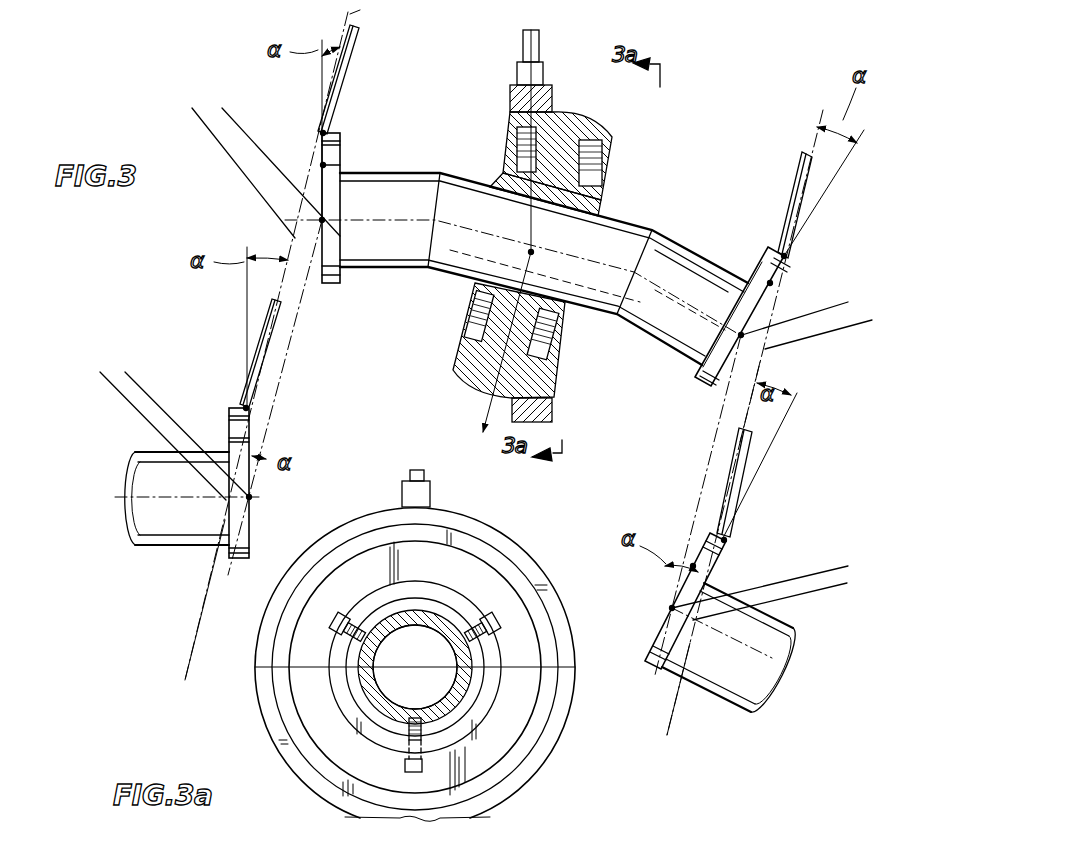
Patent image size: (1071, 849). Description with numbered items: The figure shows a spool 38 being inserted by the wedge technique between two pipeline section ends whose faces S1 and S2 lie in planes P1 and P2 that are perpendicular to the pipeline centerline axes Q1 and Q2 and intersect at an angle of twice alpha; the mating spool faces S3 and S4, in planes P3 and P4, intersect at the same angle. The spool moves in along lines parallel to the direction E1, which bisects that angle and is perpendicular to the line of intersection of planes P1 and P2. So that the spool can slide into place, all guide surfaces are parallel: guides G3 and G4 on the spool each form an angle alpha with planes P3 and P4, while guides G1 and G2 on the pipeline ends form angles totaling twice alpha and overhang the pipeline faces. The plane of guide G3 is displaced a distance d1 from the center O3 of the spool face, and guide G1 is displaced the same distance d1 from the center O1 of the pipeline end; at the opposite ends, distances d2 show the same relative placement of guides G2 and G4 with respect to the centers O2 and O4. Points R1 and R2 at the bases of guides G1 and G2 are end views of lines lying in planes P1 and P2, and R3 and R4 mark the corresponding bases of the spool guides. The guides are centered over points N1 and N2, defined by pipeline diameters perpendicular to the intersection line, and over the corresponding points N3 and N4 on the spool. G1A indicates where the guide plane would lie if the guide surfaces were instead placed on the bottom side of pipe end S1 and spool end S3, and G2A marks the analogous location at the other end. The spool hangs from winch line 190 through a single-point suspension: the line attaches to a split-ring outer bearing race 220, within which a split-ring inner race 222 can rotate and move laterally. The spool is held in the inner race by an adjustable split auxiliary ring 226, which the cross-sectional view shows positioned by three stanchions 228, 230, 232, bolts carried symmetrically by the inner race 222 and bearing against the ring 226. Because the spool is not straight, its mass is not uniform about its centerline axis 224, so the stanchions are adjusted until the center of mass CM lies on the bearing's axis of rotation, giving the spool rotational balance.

In FIG. 3, the spool 38 is at (636, 232).
In FIG. 3a, the spool 38 is at (380, 692).
In FIG. 3, the actuating rod 190 is at (541, 40).
In FIG. 3a, the actuating rod 190 is at (417, 472).
In FIG. 3, the outer bearing race 220 is at (553, 99).
In FIG. 3a, the outer bearing race 220 is at (484, 519).
In FIG. 3, the inner race 222 is at (608, 134).
In FIG. 3a, the inner race 222 is at (530, 560).
In FIG. 3, the centerline axis of the spool 224 is at (672, 315).
In FIG. 3, the adjustable auxiliary ring 226 is at (562, 312).
In FIG. 3a, the adjustable auxiliary ring 226 is at (468, 696).
In FIG. 3a, the stanchion 228 is at (322, 619).
In FIG. 3a, the stanchion 230 is at (520, 607).
In FIG. 3, the stanchion 232 is at (555, 385).
In FIG. 3a, the stanchion 232 is at (422, 766).
In FIG. 3, the center of mass of the spool CM is at (531, 254).
In FIG. 3, the direction of insertion line E1 is at (493, 237).
In FIG. 3, the guide G1 is at (305, 185).
In FIG. 3, the alternative guide plane G1A is at (183, 665).
In FIG. 3, the guide G2 is at (748, 412).
In FIG. 3, the reference line extension G2A is at (670, 727).
In FIG. 3, the guide G3 is at (357, 14).
In FIG. 3, the guide G4 is at (822, 111).
In FIG. 3, the plane P1 is at (246, 300).
In FIG. 3, the plane P2 is at (800, 393).
In FIG. 3, the plane P3 is at (321, 80).
In FIG. 3, the plane P4 is at (864, 130).
In FIG. 3, the base line of guide R1 is at (248, 408).
In FIG. 3, the base line of guide R2 is at (724, 538).
In FIG. 3, the link rod R3 is at (322, 133).
In FIG. 3, the link rod R4 is at (788, 257).
In FIG. 3, the guide centering point N1 is at (249, 441).
In FIG. 3, the guide centering point N2 is at (693, 566).
In FIG. 3, the pivot point N3 is at (322, 165).
In FIG. 3, the pivot point N4 is at (770, 284).
In FIG. 3, the pipeline section end face S1 is at (249, 518).
In FIG. 3, the pipeline section end face S2 is at (649, 655).
In FIG. 3, the spool face S3 is at (322, 195).
In FIG. 3, the spool face S4 is at (764, 334).
In FIG. 3, the center of pipeline section end O1 is at (249, 497).
In FIG. 3, the center of pipeline section end O2 is at (672, 608).
In FIG. 3, the center of spool face O3 is at (322, 221).
In FIG. 3, the center point O4 is at (742, 336).
In FIG. 3, the centerline axis Q1 is at (121, 494).
In FIG. 3, the centerline axis Q2 is at (778, 690).
In FIG. 3, the guide displacement distance d1 is at (165, 385).
In FIG. 3, the guide displacement distance d2 is at (250, 117).